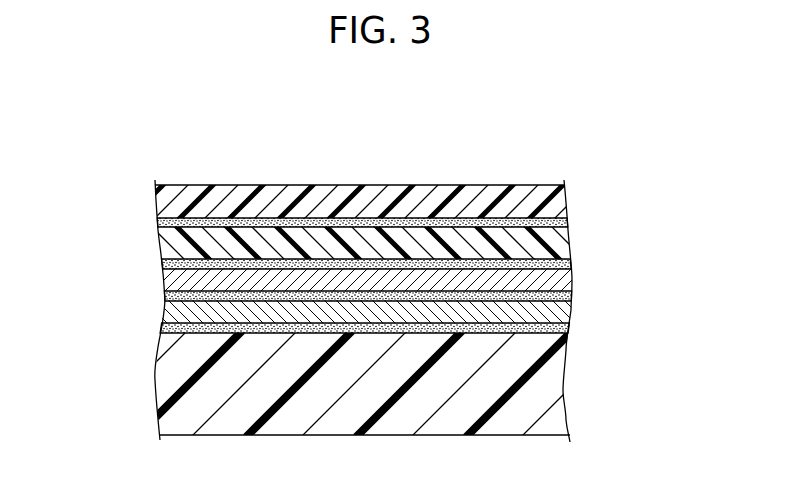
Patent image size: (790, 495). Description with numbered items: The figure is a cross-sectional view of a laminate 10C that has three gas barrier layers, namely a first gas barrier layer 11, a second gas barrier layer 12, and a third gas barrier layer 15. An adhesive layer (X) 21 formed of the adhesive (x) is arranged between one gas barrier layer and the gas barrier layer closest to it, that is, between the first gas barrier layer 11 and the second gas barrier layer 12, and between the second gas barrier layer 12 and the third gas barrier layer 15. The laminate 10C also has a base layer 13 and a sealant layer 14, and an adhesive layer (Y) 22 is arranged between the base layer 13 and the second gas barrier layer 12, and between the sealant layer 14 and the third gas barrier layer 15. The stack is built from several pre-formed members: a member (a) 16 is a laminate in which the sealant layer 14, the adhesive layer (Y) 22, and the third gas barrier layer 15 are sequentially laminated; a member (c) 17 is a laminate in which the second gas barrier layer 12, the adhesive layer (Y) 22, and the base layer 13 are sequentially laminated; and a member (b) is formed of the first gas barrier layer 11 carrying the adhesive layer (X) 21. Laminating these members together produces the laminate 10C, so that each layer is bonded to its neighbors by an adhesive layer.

The laminate 10C is at (600, 163).
The first gas barrier layer 11 is at (168, 208).
The adhesive layer (X) 21 is at (168, 222).
The base layer 13 is at (562, 244).
The adhesive layer (Y) 22 is at (572, 264).
The second gas barrier layer 12 is at (567, 280).
The third gas barrier layer 15 is at (165, 312).
The sealant layer 14 is at (170, 378).
The member (a) 16 is at (58, 308).
The member (c) 17 is at (683, 222).